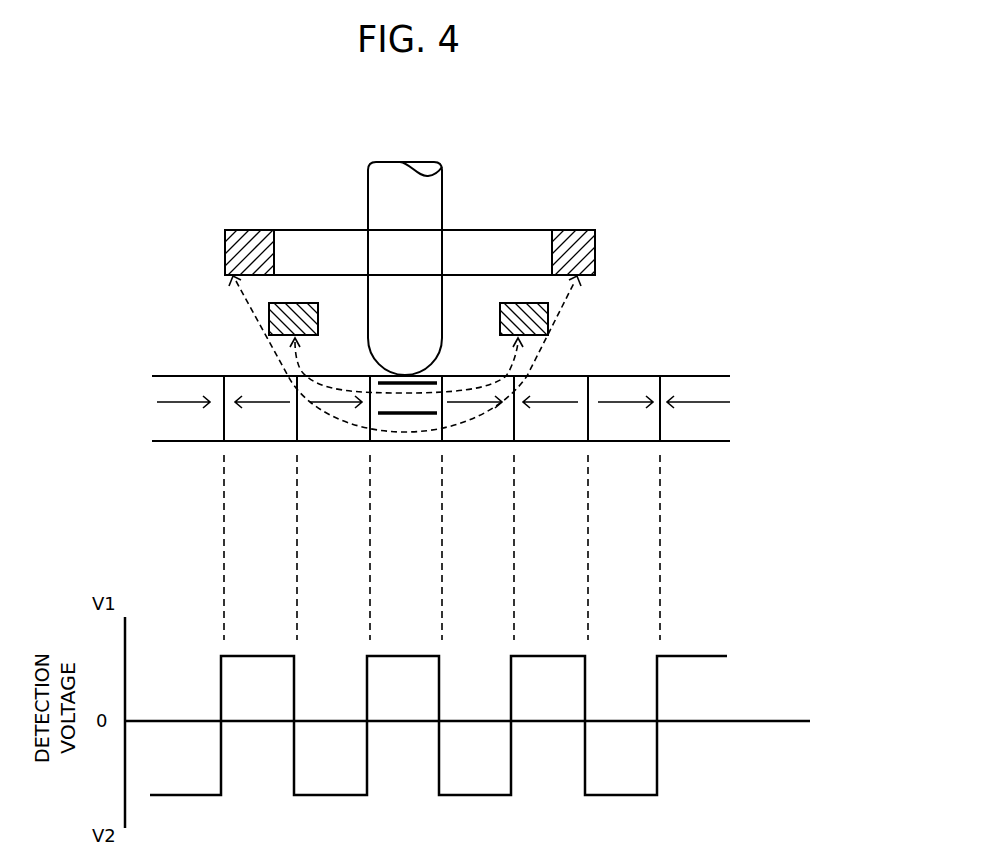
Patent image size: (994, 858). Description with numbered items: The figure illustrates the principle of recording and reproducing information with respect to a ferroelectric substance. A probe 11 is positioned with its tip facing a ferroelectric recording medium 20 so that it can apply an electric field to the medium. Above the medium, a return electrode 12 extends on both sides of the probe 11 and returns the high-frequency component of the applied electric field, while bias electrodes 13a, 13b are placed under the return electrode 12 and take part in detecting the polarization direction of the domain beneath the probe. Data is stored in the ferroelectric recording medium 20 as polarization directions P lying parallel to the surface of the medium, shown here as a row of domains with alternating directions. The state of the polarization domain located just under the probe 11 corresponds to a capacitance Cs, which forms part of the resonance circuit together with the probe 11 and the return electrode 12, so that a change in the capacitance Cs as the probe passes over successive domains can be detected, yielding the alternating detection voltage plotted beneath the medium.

The probe 11 is at (443, 172).
The return electrode 12 is at (580, 230).
The bias electrode 13a is at (270, 322).
The bias electrode 13b is at (550, 320).
The ferroelectric recording medium 20 is at (727, 442).
The polarization directions P is at (731, 400).
The capacitance Cs is at (407, 415).